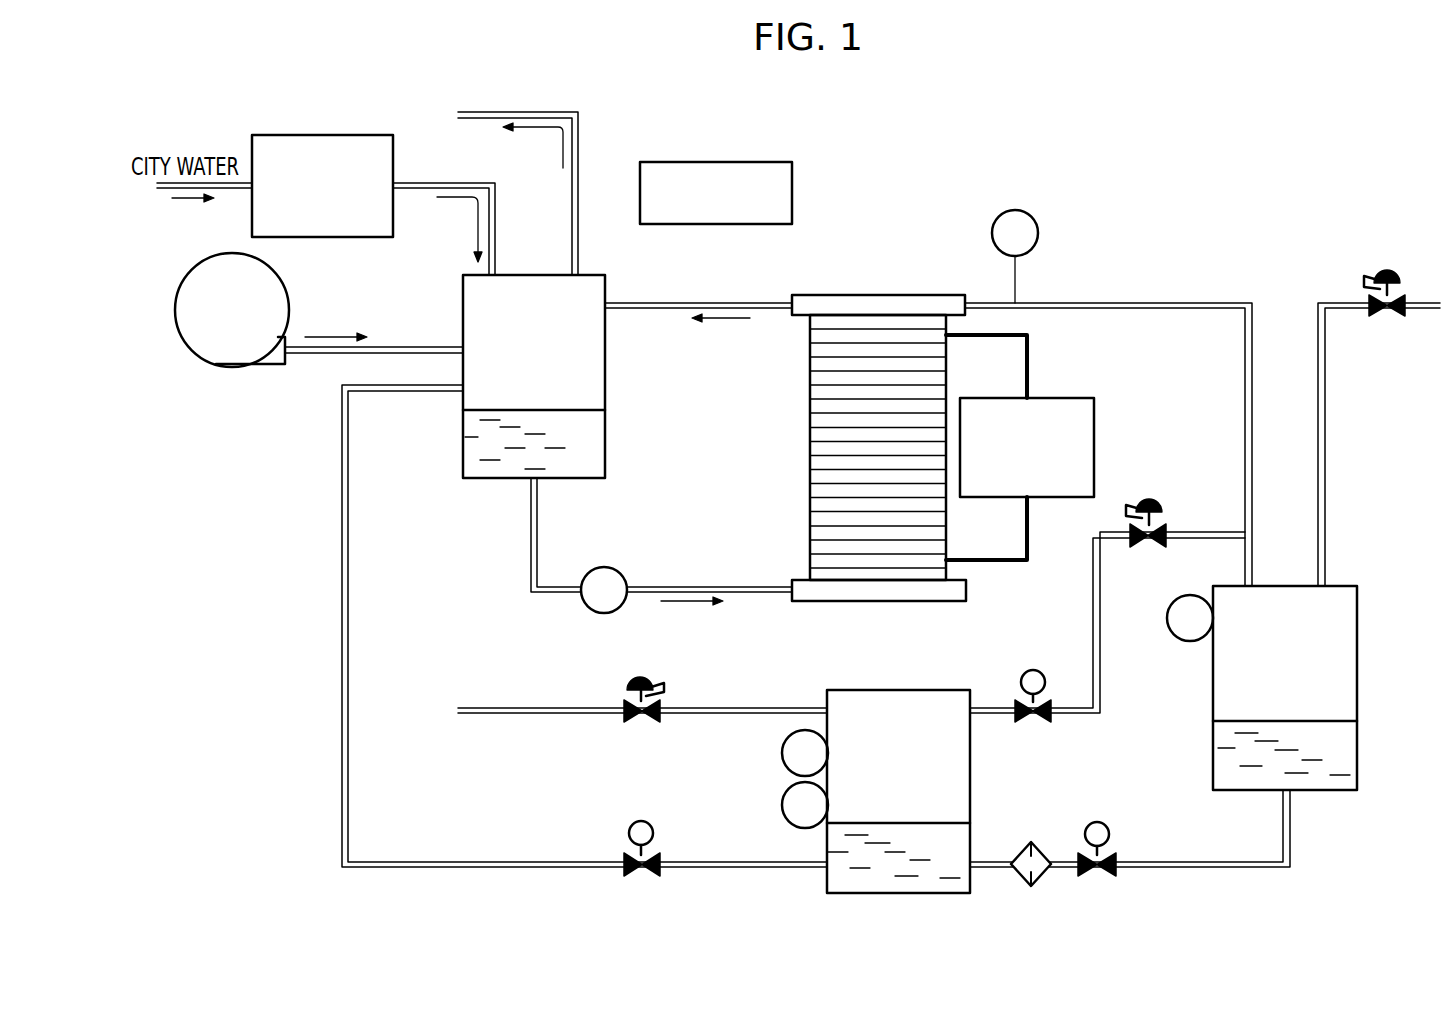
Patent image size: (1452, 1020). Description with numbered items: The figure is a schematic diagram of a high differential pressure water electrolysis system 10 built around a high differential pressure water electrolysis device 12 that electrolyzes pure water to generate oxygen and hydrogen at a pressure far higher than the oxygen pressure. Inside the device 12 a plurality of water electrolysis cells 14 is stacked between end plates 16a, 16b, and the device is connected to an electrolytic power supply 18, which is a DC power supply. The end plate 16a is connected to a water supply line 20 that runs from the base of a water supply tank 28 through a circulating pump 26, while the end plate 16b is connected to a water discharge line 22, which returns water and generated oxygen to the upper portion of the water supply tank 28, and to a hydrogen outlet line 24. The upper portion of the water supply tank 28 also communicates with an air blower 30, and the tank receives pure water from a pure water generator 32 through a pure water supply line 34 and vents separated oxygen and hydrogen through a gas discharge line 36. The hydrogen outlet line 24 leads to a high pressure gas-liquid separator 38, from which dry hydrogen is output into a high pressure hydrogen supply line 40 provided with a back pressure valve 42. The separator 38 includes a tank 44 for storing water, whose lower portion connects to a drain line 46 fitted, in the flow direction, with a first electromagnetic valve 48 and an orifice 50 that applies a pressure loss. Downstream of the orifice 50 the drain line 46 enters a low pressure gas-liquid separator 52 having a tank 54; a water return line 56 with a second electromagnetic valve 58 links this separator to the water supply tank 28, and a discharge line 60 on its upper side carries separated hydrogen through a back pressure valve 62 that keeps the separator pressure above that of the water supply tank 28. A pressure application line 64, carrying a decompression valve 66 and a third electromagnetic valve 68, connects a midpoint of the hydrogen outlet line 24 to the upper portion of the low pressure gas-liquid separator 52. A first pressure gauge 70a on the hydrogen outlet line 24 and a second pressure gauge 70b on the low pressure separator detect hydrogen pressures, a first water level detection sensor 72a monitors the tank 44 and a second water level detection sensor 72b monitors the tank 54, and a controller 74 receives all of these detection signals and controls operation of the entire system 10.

The high differential pressure water electrolysis system 10 is at (1411, 175).
The high differential pressure water electrolysis device 12 is at (853, 434).
The water electrolysis cells 14 is at (818, 462).
The end plate 16a is at (947, 590).
The end plate 16b is at (901, 300).
The electrolytic power supply 18 is at (1063, 405).
The water supply line 20 is at (741, 590).
The water discharge line 22 is at (657, 309).
The hydrogen outlet line 24 is at (1134, 307).
The circulating pump 26 is at (613, 575).
The water supply tank 28 is at (533, 279).
The air blower 30 is at (218, 355).
The pure water generator 32 is at (352, 135).
The pure water supply line 34 is at (428, 185).
The gas discharge line 36 is at (578, 112).
The high pressure gas-liquid separator 38 is at (1305, 645).
The high pressure hydrogen supply line 40 is at (1322, 387).
The back pressure valve 42 is at (1391, 270).
The tank 44 is at (1285, 590).
The drain line 46 is at (1177, 862).
The first electromagnetic valve 48 is at (1104, 821).
The orifice 50 is at (1035, 850).
The low pressure gas-liquid separator 52 is at (898, 755).
The tank 54 is at (917, 694).
The water return line 56 is at (690, 862).
The second electromagnetic valve 58 is at (641, 821).
The discharge line 60 is at (708, 712).
The back pressure valve 62 is at (641, 677).
The pressure application line 64 is at (1200, 538).
The decompression valve 66 is at (1153, 498).
The third electromagnetic valve 68 is at (1034, 669).
The first pressure gauge 70a is at (1018, 212).
The second pressure gauge 70b is at (783, 817).
The first water level detection sensor 72a is at (1180, 640).
The second water level detection sensor 72b is at (782, 760).
The controller 74 is at (777, 168).